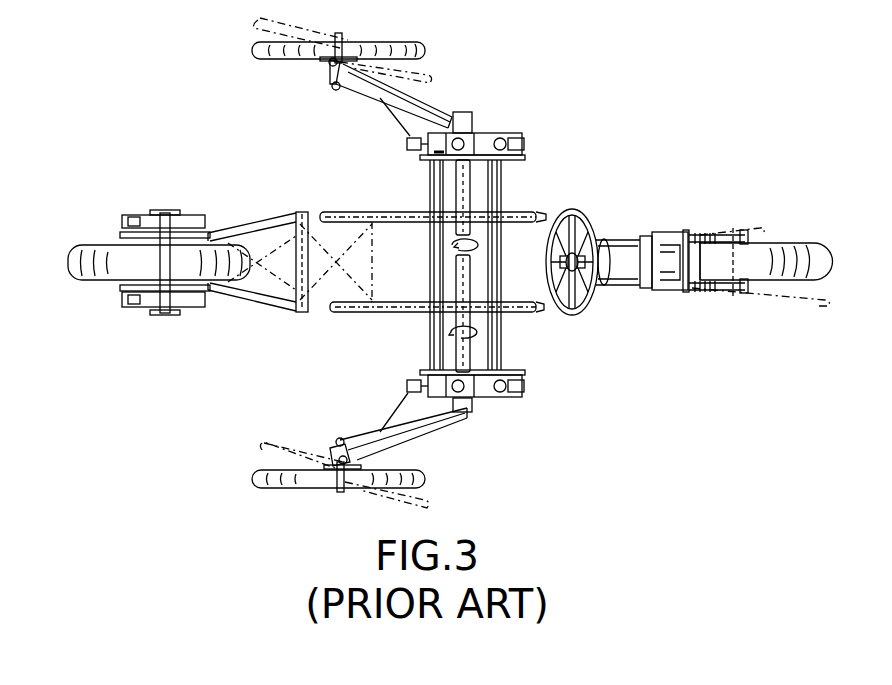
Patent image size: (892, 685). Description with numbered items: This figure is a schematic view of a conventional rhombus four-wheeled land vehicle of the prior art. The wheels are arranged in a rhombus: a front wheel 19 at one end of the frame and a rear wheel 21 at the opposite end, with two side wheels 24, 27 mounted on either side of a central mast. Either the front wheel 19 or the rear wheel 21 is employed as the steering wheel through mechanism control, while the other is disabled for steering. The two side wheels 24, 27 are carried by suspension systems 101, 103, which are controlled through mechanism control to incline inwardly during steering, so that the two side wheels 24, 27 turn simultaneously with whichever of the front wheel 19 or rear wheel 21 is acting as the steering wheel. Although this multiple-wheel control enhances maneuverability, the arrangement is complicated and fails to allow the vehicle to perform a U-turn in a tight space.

The front wheel 19 is at (776, 248).
The rear wheel 21 is at (108, 270).
The side wheel 24 is at (246, 478).
The side wheel 27 is at (437, 50).
The suspension system 101 is at (440, 401).
The suspension system 103 is at (470, 141).